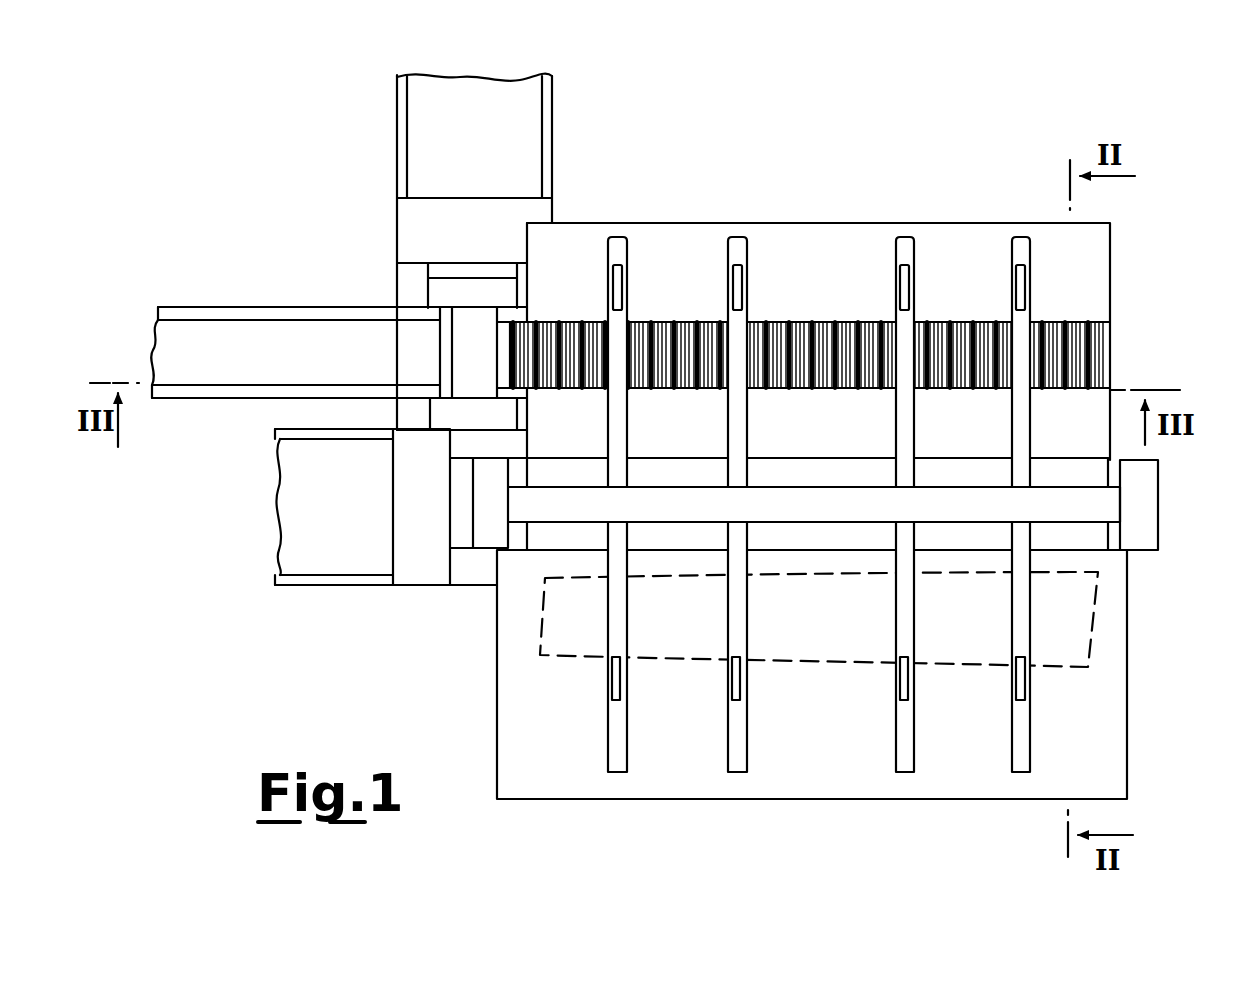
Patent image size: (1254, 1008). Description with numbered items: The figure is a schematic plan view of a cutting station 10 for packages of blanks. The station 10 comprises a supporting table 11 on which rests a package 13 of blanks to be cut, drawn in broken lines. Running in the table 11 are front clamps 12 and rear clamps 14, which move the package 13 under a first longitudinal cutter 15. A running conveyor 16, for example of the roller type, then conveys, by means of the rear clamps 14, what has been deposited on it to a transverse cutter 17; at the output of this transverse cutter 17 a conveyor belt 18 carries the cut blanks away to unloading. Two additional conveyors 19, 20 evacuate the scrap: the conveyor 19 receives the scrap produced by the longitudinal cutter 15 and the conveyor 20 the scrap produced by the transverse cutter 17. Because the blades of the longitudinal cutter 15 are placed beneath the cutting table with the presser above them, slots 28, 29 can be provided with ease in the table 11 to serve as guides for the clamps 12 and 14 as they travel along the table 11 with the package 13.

The station 10 is at (955, 132).
The supporting table 11 is at (1105, 717).
The front clamps 12 is at (615, 675).
The package 13 is at (1100, 628).
The rear clamps 14 is at (623, 282).
The first longitudinal cutter 15 is at (1170, 521).
The running conveyor 16 is at (1122, 353).
The transverse cutter 17 is at (452, 326).
The conveyor belt 18 is at (197, 345).
The additional conveyor 19 is at (355, 552).
The additional conveyor 20 is at (513, 140).
The slot 28 is at (612, 740).
The slot 29 is at (618, 430).